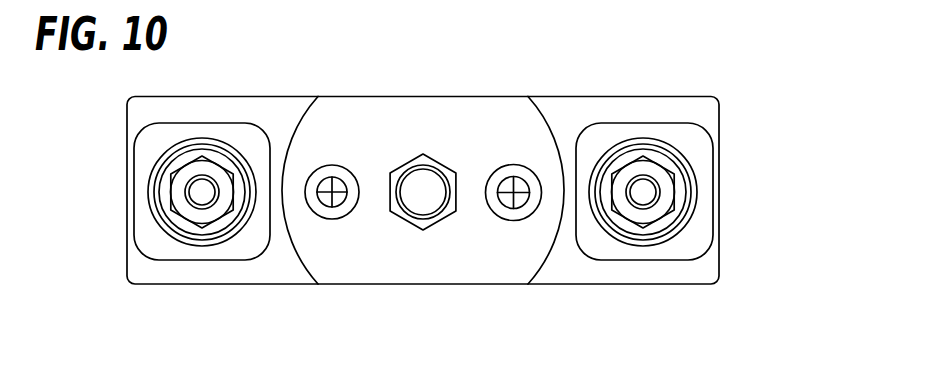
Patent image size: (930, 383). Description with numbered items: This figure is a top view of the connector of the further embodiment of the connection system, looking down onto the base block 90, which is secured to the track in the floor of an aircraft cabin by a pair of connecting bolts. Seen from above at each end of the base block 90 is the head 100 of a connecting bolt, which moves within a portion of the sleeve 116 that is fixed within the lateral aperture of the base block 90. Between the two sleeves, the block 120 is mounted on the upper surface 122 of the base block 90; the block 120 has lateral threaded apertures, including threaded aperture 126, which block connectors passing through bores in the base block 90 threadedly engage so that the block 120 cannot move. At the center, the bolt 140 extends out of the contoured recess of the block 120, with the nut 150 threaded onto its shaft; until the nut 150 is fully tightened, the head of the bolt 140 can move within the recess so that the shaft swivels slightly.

The base block 90 is at (692, 286).
The head 100 is at (667, 190).
The sleeve 116 is at (145, 232).
The block 120 is at (496, 270).
The upper surface 122 is at (279, 112).
The lateral threaded aperture 126 is at (317, 218).
The bolt 140 is at (420, 205).
The nut 150 is at (423, 229).